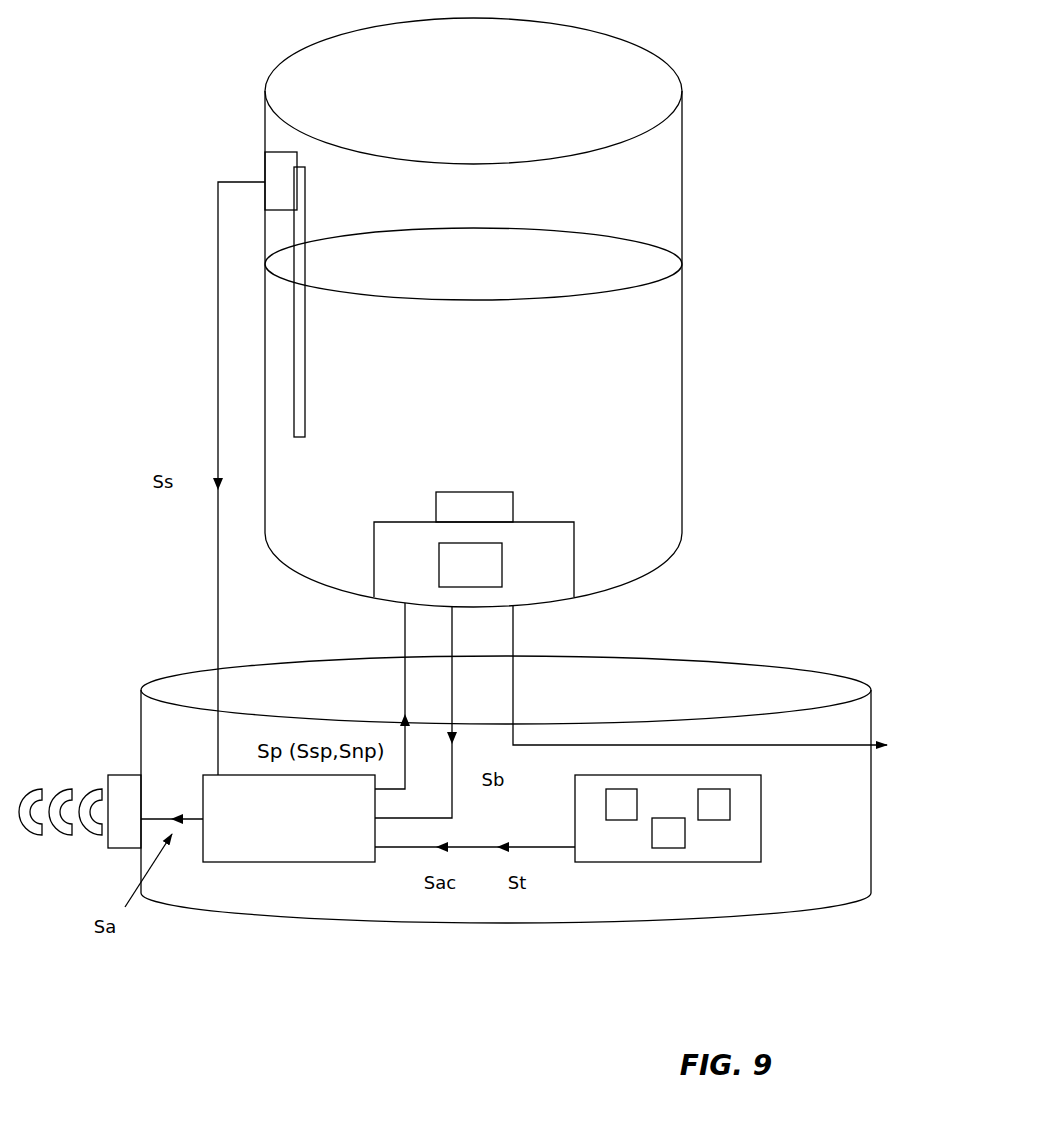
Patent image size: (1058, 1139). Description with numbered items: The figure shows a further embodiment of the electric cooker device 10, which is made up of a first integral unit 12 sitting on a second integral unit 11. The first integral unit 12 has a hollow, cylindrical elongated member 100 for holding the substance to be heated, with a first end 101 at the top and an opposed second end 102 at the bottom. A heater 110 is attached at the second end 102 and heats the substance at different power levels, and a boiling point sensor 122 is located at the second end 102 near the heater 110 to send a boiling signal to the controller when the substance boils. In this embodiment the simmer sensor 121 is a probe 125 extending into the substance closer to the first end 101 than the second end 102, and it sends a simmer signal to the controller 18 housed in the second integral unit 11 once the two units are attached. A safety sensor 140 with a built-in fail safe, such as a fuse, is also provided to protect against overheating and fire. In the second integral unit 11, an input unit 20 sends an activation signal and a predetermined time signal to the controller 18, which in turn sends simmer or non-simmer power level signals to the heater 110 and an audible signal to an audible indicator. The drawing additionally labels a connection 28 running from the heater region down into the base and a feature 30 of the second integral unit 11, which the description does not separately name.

The electric cooker device 10 is at (793, 240).
The second integral unit 11 is at (781, 938).
The first integral unit 12 is at (686, 343).
The controller 18 is at (280, 880).
The input unit 20 is at (637, 878).
The connection lines 28 is at (531, 642).
The base top surface 30 is at (888, 728).
The elongated member 100 is at (701, 210).
The first end 101 is at (685, 76).
The second end 102 is at (703, 537).
The heater 110 is at (593, 537).
The simmer sensor 121 is at (263, 163).
The boiling point sensor 122 is at (531, 492).
The sensor probe 125 is at (295, 268).
The safety sensor 140 is at (452, 558).